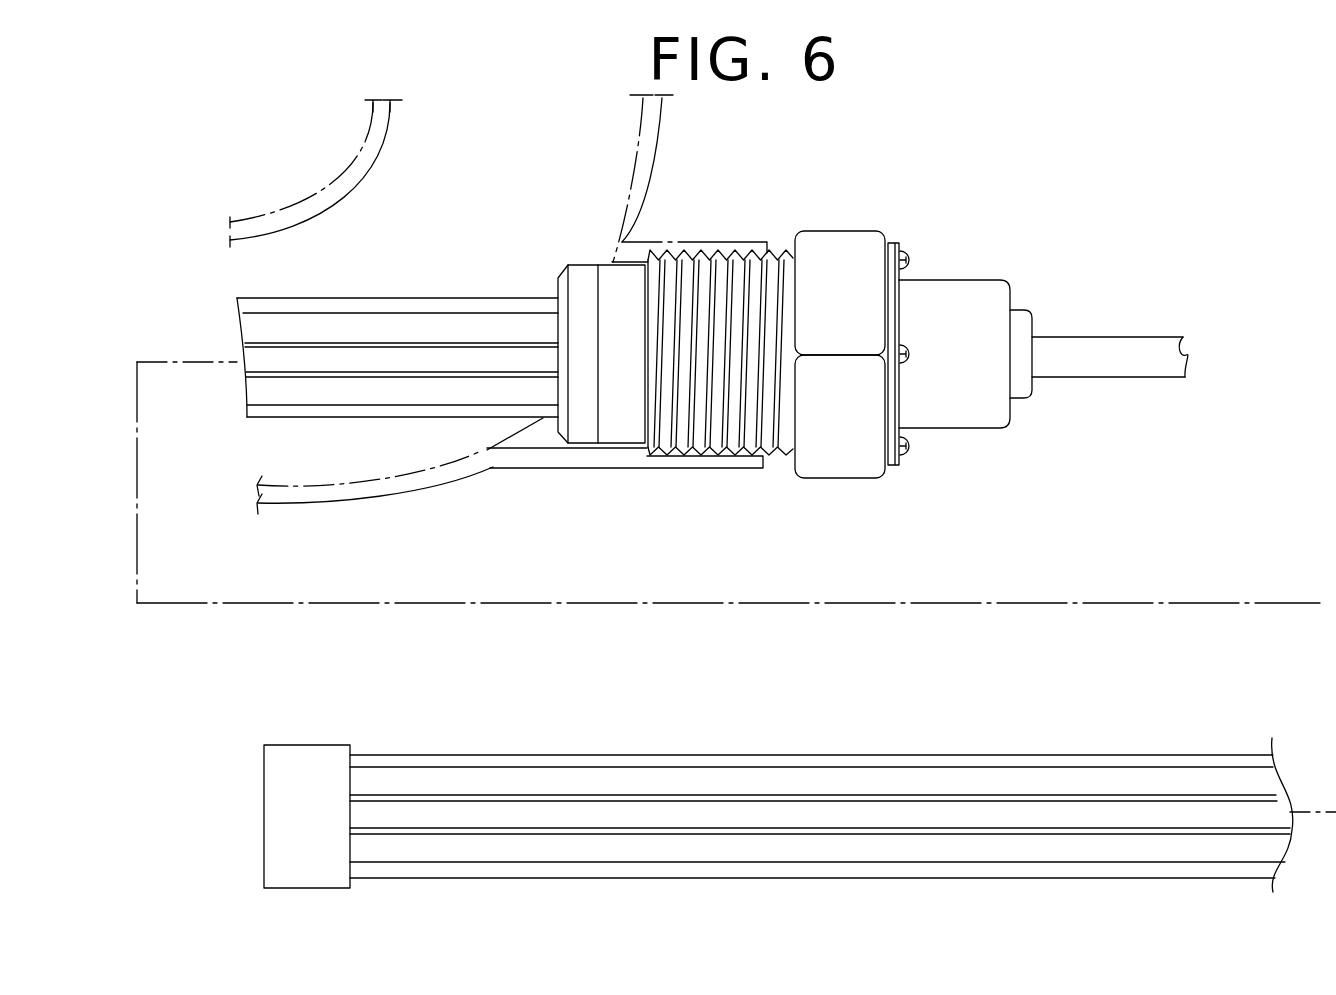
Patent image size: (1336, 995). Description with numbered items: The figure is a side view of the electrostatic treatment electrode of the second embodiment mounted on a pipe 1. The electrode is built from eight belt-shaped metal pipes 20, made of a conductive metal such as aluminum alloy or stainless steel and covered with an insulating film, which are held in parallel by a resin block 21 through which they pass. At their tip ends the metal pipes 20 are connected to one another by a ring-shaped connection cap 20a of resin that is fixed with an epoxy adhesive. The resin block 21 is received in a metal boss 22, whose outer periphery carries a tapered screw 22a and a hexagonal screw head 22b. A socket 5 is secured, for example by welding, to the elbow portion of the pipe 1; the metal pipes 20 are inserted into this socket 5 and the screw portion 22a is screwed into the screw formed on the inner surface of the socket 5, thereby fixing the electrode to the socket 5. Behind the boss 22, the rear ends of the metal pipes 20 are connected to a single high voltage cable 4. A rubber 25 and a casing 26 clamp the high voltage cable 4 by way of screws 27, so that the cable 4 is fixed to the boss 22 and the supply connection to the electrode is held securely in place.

The pipe 1 is at (440, 487).
The high voltage cable 4 is at (1144, 377).
The socket 5 is at (752, 242).
The metal pipes 20 is at (350, 298).
The connection cap 20a is at (264, 813).
The resin block 21 is at (593, 418).
The boss 22 is at (840, 465).
The tapered screw 22a is at (693, 250).
The hexagonal screw head 22b is at (850, 231).
The rubber 25 is at (1027, 398).
The casing 26 is at (983, 428).
The screws 27 is at (912, 462).